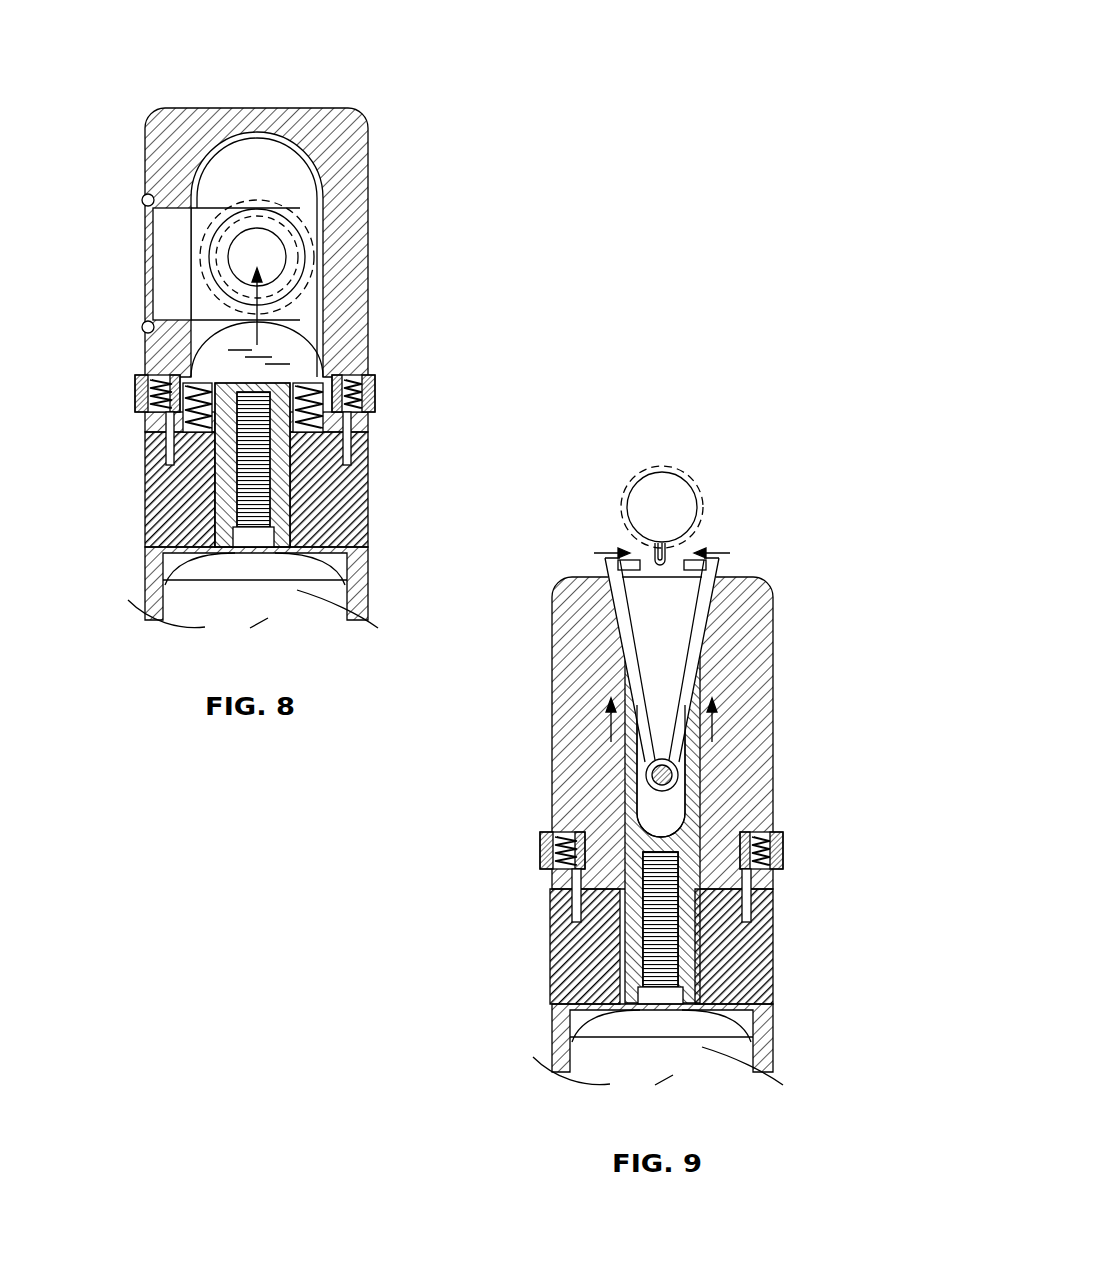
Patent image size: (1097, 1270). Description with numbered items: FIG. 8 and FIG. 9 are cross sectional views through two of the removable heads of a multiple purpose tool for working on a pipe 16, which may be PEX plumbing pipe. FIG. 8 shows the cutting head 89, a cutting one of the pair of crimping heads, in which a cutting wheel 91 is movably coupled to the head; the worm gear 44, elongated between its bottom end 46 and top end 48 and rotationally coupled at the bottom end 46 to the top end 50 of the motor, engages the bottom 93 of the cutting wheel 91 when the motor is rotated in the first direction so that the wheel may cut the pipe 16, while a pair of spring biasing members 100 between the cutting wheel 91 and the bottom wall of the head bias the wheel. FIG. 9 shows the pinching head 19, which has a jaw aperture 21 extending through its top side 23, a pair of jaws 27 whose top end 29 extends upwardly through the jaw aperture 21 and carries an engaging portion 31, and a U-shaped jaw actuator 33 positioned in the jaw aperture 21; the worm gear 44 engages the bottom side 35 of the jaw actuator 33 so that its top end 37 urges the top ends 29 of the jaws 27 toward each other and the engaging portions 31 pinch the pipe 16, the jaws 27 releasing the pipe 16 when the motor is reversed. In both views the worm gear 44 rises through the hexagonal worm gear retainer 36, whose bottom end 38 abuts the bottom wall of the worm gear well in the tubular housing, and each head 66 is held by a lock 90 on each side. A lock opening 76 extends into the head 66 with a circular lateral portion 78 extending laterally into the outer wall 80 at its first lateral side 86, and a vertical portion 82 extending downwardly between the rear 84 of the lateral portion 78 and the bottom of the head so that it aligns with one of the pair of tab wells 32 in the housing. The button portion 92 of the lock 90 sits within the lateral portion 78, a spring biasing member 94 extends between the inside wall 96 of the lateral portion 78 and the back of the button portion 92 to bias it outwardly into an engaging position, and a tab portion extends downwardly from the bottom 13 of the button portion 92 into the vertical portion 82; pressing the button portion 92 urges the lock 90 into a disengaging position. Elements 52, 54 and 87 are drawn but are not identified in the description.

In FIG. 9, the bottom of the button portion 13 is at (568, 893).
In FIG. 8, the pipe 16 is at (210, 240).
In FIG. 9, the pipe 16 is at (632, 478).
In FIG. 9, the pinching head 19 is at (770, 580).
In FIG. 9, the jaw aperture 21 is at (640, 690).
In FIG. 9, the top side of the pinching head 23 is at (727, 575).
In FIG. 9, the pair of jaws 27 is at (590, 606).
In FIG. 9, the top end of the pair of jaws 29 is at (615, 560).
In FIG. 9, the engaging portion 31 is at (657, 548).
In FIG. 8, the pair of tab wells 32 is at (347, 458).
In FIG. 9, the pair of tab wells 32 is at (574, 916).
In FIG. 9, the U-shaped jaw actuator 33 is at (745, 708).
In FIG. 9, the bottom side of the U-shaped jaw actuator 35 is at (632, 862).
In FIG. 8, the worm gear retainer 36 is at (330, 500).
In FIG. 9, the worm gear retainer 36 is at (565, 950).
In FIG. 9, the top end of the U-shaped jaw actuator 37 is at (625, 660).
In FIG. 8, the bottom end of the worm gear retainer 38 is at (363, 567).
In FIG. 9, the bottom end of the worm gear retainer 38 is at (562, 1012).
In FIG. 8, the worm gear 44 is at (170, 583).
In FIG. 9, the worm gear 44 is at (580, 996).
In FIG. 8, the bottom end of the worm gear 46 is at (318, 355).
In FIG. 9, the bottom end of the worm gear 46 is at (705, 845).
In FIG. 8, the top end of the worm gear 48 is at (268, 545).
In FIG. 9, the top end of the worm gear 48 is at (680, 992).
In FIG. 8, the top end of the motor 50 is at (170, 620).
In FIG. 9, the top end of the motor 50 is at (578, 1077).
In FIG. 8, the passage 52 is at (262, 515).
In FIG. 9, the passage 52 is at (668, 965).
In FIG. 8, the sleeve 54 is at (285, 455).
In FIG. 9, the sleeve 54 is at (690, 930).
In FIG. 8, the head 66 is at (356, 78).
In FIG. 9, the head 66 is at (551, 522).
In FIG. 8, the lock opening 76 is at (160, 378).
In FIG. 9, the lock opening 76 is at (568, 832).
In FIG. 8, the lateral portion of the lock opening 78 is at (140, 420).
In FIG. 9, the lateral portion of the lock opening 78 is at (550, 856).
In FIG. 8, the outer wall of the head 80 is at (142, 328).
In FIG. 9, the outer wall of the head 80 is at (575, 740).
In FIG. 8, the vertical portion of the lock opening 82 is at (352, 432).
In FIG. 9, the vertical portion of the lock opening 82 is at (752, 922).
In FIG. 8, the rear of the lateral portion 84 is at (378, 378).
In FIG. 9, the rear of the lateral portion 84 is at (783, 855).
In FIG. 8, the first lateral side 86 is at (144, 322).
In FIG. 9, the first lateral side 86 is at (598, 725).
In FIG. 8, the housing 87 is at (368, 255).
In FIG. 9, the housing 87 is at (773, 752).
In FIG. 8, the cutting head 89 is at (160, 110).
In FIG. 9, the lock 90 is at (514, 830).
In FIG. 8, the cutting wheel 91 is at (325, 240).
In FIG. 8, the button portion of the lock 92 is at (385, 396).
In FIG. 9, the button portion of the lock 92 is at (782, 864).
In FIG. 8, the bottom of the cutting wheel 93 is at (322, 205).
In FIG. 8, the spring biasing member 94 is at (360, 375).
In FIG. 8, the inside wall of the lateral portion 96 is at (168, 445).
In FIG. 9, the inside wall of the lateral portion 96 is at (574, 882).
In FIG. 8, the pair of spring biasing members 100 is at (205, 380).